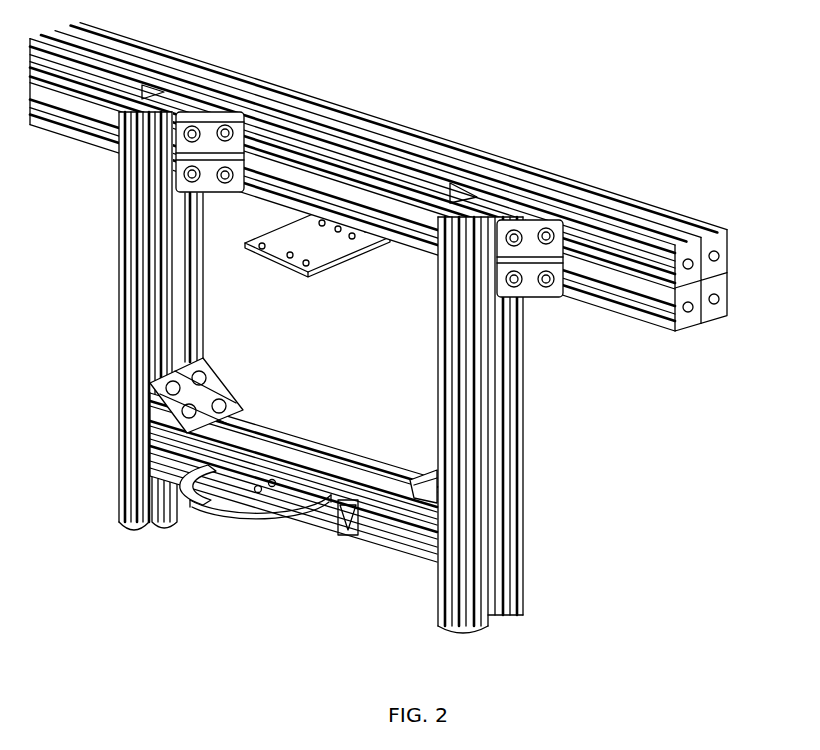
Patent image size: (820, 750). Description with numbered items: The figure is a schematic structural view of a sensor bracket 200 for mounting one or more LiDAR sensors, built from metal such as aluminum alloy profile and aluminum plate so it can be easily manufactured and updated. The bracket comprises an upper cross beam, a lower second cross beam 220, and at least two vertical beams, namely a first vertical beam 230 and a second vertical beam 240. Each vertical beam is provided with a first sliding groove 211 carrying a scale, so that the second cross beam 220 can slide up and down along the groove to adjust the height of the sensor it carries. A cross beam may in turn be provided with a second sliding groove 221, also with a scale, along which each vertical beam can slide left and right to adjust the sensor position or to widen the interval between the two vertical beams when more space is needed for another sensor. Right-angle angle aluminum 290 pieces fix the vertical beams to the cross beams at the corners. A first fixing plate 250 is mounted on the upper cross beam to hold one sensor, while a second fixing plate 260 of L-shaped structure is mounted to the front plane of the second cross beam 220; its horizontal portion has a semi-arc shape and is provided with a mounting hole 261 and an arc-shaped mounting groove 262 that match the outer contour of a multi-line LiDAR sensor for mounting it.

The sensor bracket 200 is at (408, 354).
The first sliding groove 211 is at (158, 328).
The second cross beam 220 is at (388, 537).
The second sliding groove 221 is at (720, 304).
The first vertical beam 230 is at (130, 278).
The second vertical beam 240 is at (497, 402).
The first fixing plate 250 is at (297, 243).
The second fixing plate 260 is at (238, 482).
The mounting hole 261 is at (260, 490).
The arc-shaped mounting groove 262 is at (203, 488).
The right-angle angle aluminum 290 is at (199, 132).